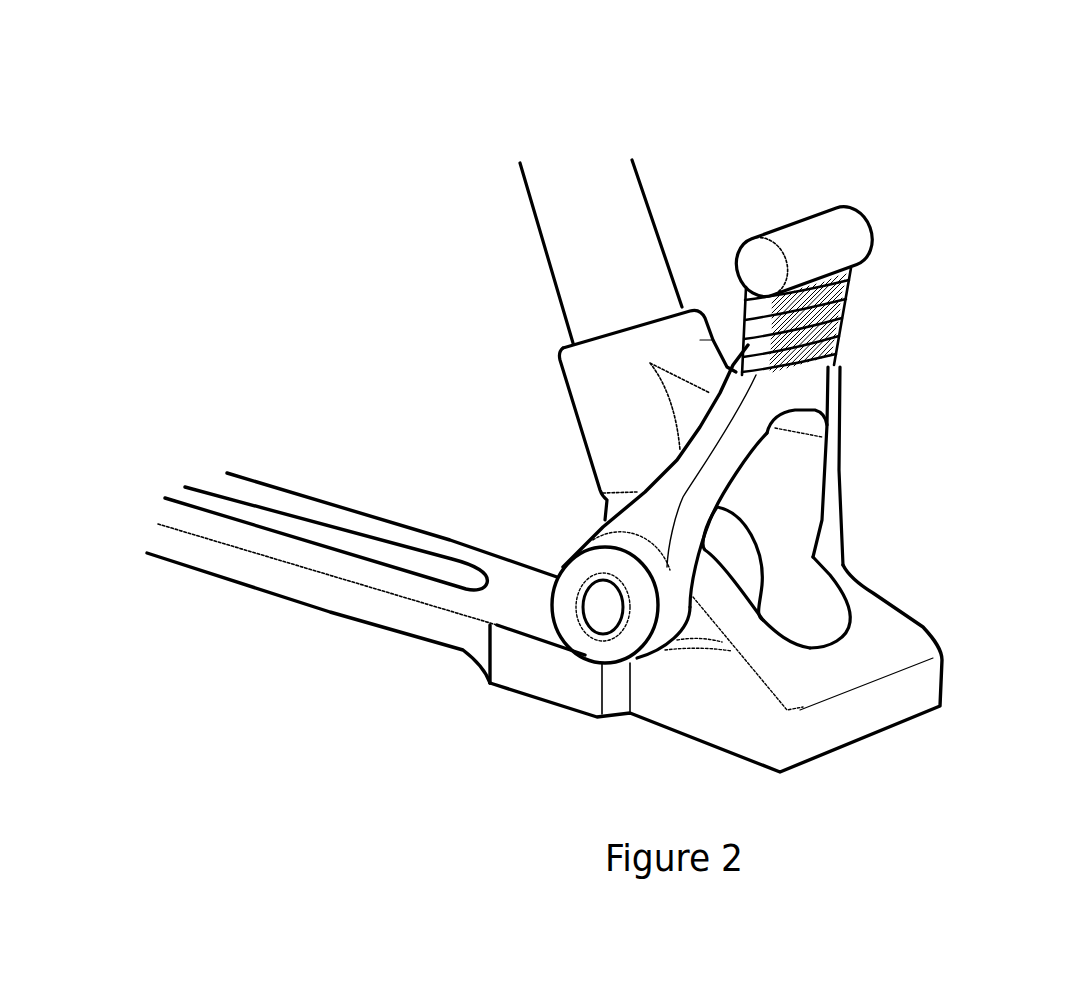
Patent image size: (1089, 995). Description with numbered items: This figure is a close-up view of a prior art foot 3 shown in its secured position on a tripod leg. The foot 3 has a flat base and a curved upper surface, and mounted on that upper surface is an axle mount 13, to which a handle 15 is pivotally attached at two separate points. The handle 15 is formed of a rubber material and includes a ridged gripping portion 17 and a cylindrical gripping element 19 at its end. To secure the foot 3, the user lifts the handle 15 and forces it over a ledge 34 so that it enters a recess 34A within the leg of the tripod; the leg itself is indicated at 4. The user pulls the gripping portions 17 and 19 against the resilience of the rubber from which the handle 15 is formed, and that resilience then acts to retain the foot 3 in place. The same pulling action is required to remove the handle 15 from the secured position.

The foot 3 is at (928, 627).
The tube 4 is at (547, 278).
The axle mount 13 is at (848, 520).
The handle 15 is at (840, 445).
The ridged gripping portion 17 is at (850, 311).
The cylindrical gripping element 19 is at (845, 240).
The ledge 34 is at (812, 422).
The recess 34A is at (690, 350).